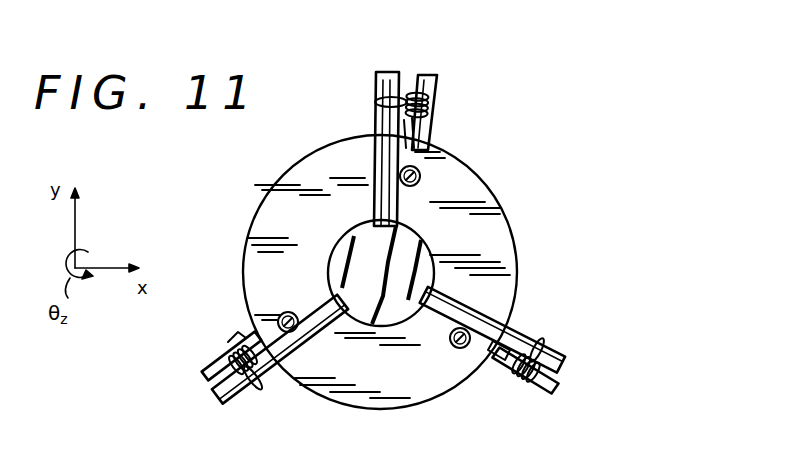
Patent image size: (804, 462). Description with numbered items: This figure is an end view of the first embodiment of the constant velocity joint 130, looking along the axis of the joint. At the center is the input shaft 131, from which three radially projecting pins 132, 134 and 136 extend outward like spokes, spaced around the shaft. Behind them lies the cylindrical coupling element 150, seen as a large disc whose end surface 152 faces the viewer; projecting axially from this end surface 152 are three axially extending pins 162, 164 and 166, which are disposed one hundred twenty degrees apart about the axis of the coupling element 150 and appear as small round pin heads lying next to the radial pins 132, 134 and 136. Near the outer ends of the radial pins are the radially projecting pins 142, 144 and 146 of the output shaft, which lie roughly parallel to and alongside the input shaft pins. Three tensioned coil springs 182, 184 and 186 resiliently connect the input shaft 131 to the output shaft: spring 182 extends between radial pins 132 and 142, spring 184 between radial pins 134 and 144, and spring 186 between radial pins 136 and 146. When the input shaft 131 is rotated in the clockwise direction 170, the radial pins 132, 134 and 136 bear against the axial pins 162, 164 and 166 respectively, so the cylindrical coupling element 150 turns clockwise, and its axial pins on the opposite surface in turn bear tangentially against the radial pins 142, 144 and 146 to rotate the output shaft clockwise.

The constant velocity joint 130 is at (508, 206).
The input shaft 131 is at (322, 238).
The radially projecting pin 132 is at (565, 364).
The radially projecting pin 134 is at (380, 72).
The radially projecting pin 136 is at (237, 405).
The radially projecting pin 142 is at (556, 392).
The radially projecting pin 144 is at (437, 83).
The radially projecting pin 146 is at (200, 372).
The cylindrical coupling element 150 is at (520, 277).
The end surface 152 is at (375, 398).
The axially extending pin 162 is at (462, 350).
The axially extending pin 164 is at (420, 178).
The axially extending pin 166 is at (275, 315).
The clockwise direction 170 is at (433, 217).
The tensioned coil spring 182 is at (533, 392).
The tensioned coil spring 184 is at (410, 80).
The tensioned coil spring 186 is at (225, 385).